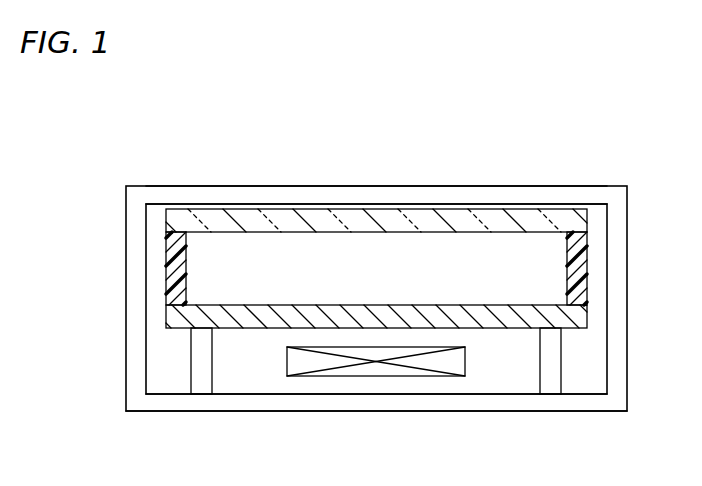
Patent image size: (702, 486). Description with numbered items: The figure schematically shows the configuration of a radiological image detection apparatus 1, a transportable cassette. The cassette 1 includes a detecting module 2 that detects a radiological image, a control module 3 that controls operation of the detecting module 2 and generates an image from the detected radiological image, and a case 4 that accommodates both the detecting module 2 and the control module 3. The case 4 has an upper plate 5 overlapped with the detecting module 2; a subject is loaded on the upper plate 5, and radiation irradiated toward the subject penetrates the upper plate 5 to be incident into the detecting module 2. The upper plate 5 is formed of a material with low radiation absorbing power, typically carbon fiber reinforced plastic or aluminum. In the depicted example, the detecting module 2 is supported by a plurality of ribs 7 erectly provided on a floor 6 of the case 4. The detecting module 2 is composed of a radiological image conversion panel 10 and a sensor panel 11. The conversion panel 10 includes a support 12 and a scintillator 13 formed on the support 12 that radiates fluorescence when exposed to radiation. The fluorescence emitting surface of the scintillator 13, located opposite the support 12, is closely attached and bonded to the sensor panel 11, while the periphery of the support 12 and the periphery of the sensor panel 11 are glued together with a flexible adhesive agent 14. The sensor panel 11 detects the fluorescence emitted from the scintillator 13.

The radiological image detection apparatus 1 is at (657, 128).
The detecting module 2 is at (42, 212).
The control module 3 is at (375, 370).
The case 4 is at (640, 281).
The upper plate 5 is at (484, 193).
The floor 6 is at (484, 402).
The ribs 7 is at (201, 385).
The radiological image conversion panel 10 is at (80, 272).
The sensor panel 11 is at (172, 218).
The support 12 is at (172, 315).
The scintillator 13 is at (198, 285).
The flexible adhesive agent 14 is at (172, 252).